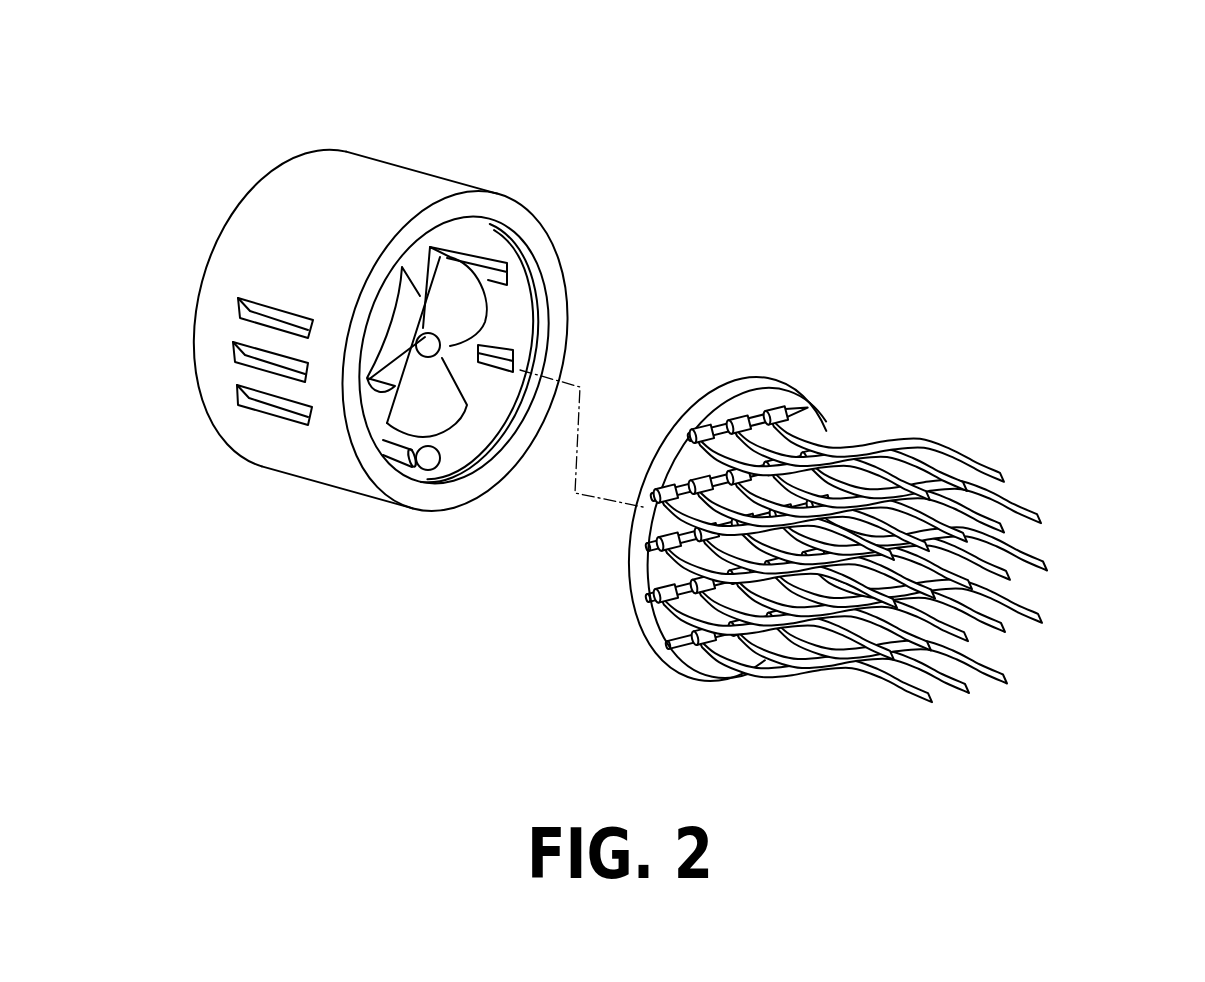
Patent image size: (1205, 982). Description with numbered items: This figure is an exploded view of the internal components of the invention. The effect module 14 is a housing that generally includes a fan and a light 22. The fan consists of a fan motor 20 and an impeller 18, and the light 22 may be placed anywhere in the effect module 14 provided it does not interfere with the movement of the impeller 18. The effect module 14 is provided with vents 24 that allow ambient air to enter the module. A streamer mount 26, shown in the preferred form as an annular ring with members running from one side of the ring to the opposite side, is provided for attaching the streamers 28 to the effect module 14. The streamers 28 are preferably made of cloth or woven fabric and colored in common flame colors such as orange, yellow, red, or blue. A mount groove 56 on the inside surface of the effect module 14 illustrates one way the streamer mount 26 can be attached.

The effect module 14 is at (433, 155).
The impeller 18 is at (480, 323).
The fan motor 20 is at (395, 370).
The light 22 is at (432, 462).
The vents 24 is at (270, 405).
The streamer mount 26 is at (635, 583).
The streamers 28 is at (1030, 550).
The mount groove 56 is at (533, 262).